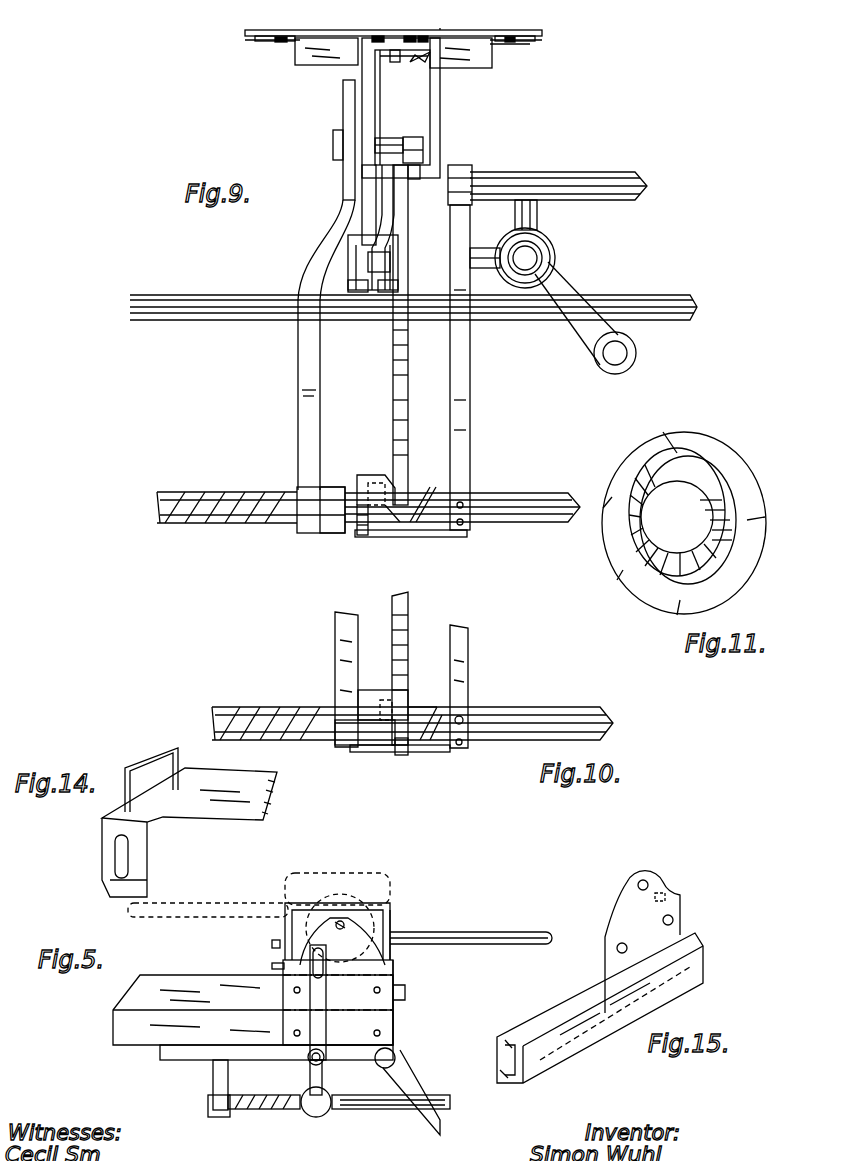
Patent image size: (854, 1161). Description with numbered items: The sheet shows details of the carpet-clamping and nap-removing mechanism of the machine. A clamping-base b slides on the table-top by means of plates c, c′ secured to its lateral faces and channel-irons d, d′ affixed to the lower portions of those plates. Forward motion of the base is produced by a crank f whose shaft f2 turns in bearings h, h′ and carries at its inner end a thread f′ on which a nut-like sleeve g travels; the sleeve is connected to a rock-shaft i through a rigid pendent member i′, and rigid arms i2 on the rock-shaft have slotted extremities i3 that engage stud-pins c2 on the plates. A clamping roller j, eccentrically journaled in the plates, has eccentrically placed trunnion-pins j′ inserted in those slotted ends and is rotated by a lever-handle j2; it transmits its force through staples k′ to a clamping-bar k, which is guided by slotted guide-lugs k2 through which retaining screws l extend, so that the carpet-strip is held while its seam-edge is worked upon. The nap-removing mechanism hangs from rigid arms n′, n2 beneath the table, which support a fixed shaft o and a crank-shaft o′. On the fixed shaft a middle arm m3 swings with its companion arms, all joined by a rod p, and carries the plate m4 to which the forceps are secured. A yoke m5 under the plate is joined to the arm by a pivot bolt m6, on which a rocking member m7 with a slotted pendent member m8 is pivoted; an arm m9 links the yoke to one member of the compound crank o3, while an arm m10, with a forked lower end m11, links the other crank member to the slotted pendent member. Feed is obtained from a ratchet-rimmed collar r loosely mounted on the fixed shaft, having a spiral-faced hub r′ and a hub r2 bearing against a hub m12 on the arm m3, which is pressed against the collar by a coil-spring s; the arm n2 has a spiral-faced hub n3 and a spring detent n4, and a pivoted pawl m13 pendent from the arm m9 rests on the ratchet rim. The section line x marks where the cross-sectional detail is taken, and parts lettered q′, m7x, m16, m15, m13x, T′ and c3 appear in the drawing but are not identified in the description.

In FIG. 9, the plate m4 is at (393, 25).
In FIG. 9, the fastening pieces q′ is at (418, 36).
In FIG. 9, the section line x is at (440, 28).
In FIG. 9, the spring catch m7x is at (415, 52).
In FIG. 9, the strip m16 is at (530, 42).
In FIG. 9, the yoke m5 is at (355, 74).
In FIG. 9, the rocking member m7 is at (372, 115).
In FIG. 9, the pin m15 is at (395, 60).
In FIG. 9, the pivot bolt m6 is at (397, 136).
In FIG. 9, the arm m9 is at (420, 136).
In FIG. 9, the arm m10 is at (380, 200).
In FIG. 9, the pendent member m8 is at (362, 213).
In FIG. 9, the compound crank o3 is at (415, 182).
In FIG. 9, the forked lower end m11 is at (348, 258).
In FIG. 9, the middle arm m3 is at (298, 370).
In FIG. 10, the middle arm m3 is at (335, 650).
In FIG. 9, the pivoted pawl m13 is at (392, 383).
In FIG. 10, the pivoted pawl m13 is at (415, 668).
In FIG. 9, the rigid arm n2 is at (470, 398).
In FIG. 10, the rigid arm n2 is at (470, 656).
In FIG. 9, the crank-shaft o′ is at (558, 179).
In FIG. 9, the pendent member i′ is at (538, 218).
In FIG. 9, the nut-like sleeve g is at (556, 252).
In FIG. 5, the nut-like sleeve g is at (318, 1118).
In FIG. 9, the bearing h is at (485, 248).
In FIG. 9, the crank f is at (585, 318).
In FIG. 9, the rod p is at (640, 295).
In FIG. 9, the fixed shaft o is at (462, 499).
In FIG. 10, the fixed shaft o is at (474, 712).
In FIG. 9, the coil-spring s is at (210, 492).
In FIG. 10, the coil-spring s is at (268, 707).
In FIG. 9, the block m13x is at (322, 538).
In FIG. 10, the block m13x is at (370, 698).
In FIG. 9, the hub m12 is at (325, 487).
In FIG. 10, the hub m12 is at (358, 735).
In FIG. 9, the hub r2 is at (360, 484).
In FIG. 9, the stop T′ is at (410, 520).
In FIG. 9, the spiral-faced hub n3 is at (437, 486).
In FIG. 10, the spiral-faced hub n3 is at (436, 752).
In FIG. 9, the ratchet-rimmed collar r is at (362, 540).
In FIG. 11, the ratchet-rimmed collar r is at (684, 523).
In FIG. 10, the ratchet-rimmed collar r is at (401, 758).
In FIG. 9, the spring detent n4 is at (393, 540).
In FIG. 10, the spring detent n4 is at (373, 755).
In FIG. 11, the spiral-faced hub r′ is at (616, 476).
In FIG. 10, the spiral-faced hub r′ is at (418, 705).
In FIG. 14, the clamping-bar k is at (189, 795).
In FIG. 5, the clamping-bar k is at (392, 958).
In FIG. 14, the staples k′ is at (151, 771).
In FIG. 5, the staples k′ is at (310, 903).
In FIG. 14, the slotted guide-lugs k2 is at (137, 857).
In FIG. 5, the slotted guide-lugs k2 is at (400, 1012).
In FIG. 5, the clamping roller j is at (352, 922).
In FIG. 5, the trunnion-pins j′ is at (340, 925).
In FIG. 5, the lever-handle j2 is at (471, 928).
In FIG. 5, the stud-pins c2 is at (320, 945).
In FIG. 5, the slotted extremities i3 is at (305, 963).
In FIG. 5, the clamping-base b is at (253, 1010).
In FIG. 5, the channel-iron d′ is at (261, 1039).
In FIG. 5, the plate c′ is at (338, 1002).
In FIG. 5, the rigid arms i2 is at (318, 1002).
In FIG. 5, the retaining screws l is at (408, 992).
In FIG. 5, the rock-shaft i is at (308, 1062).
In FIG. 5, the rigid arm n′ is at (407, 1091).
In FIG. 5, the bearing h′ is at (213, 1080).
In FIG. 5, the thread f′ is at (264, 1114).
In FIG. 5, the shaft f2 is at (450, 1102).
In FIG. 15, the channel-iron d is at (552, 1010).
In FIG. 15, the plate c is at (642, 942).
In FIG. 15, the hole c3 is at (668, 892).